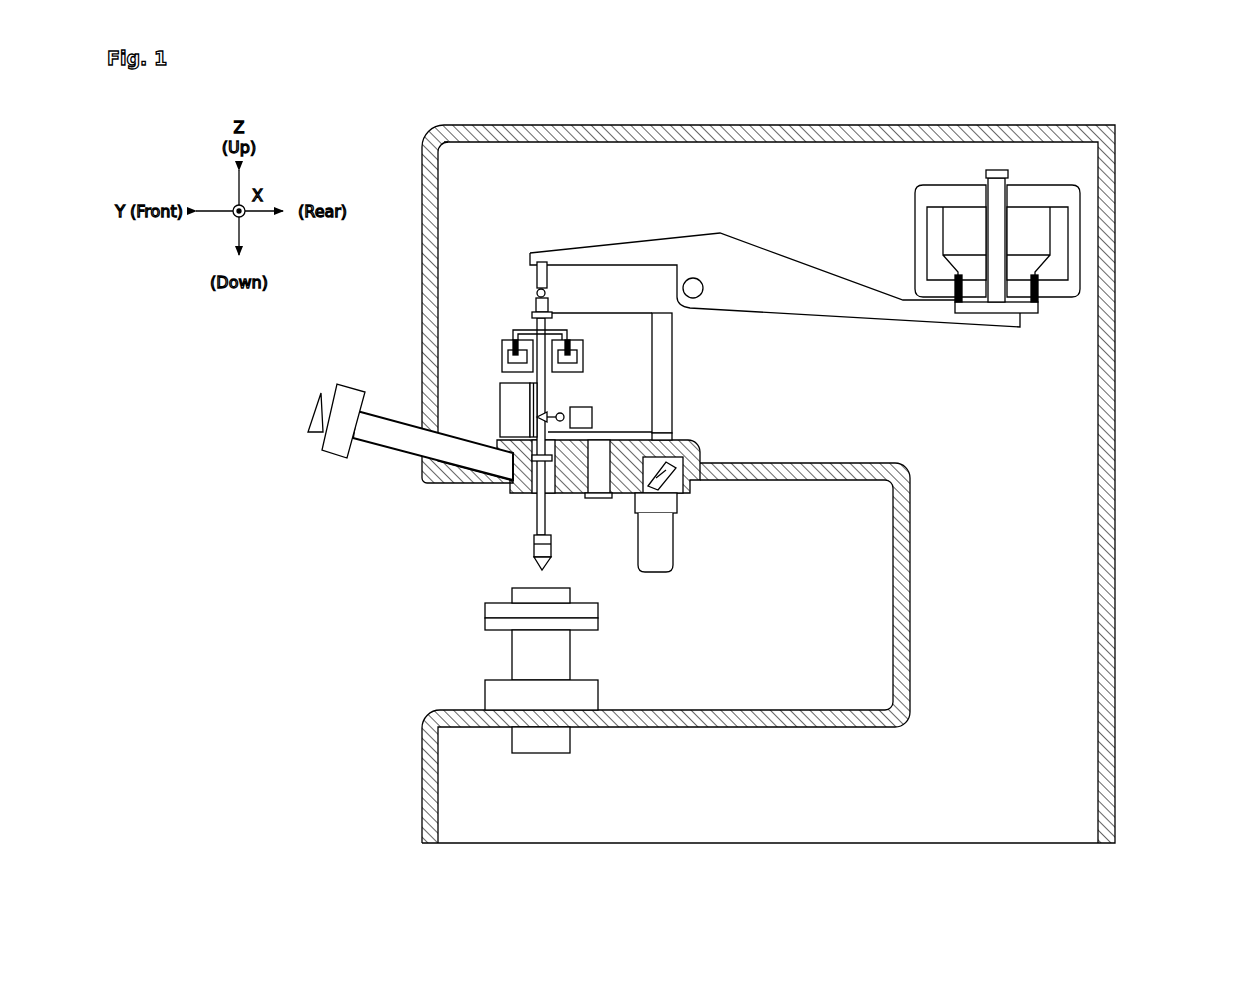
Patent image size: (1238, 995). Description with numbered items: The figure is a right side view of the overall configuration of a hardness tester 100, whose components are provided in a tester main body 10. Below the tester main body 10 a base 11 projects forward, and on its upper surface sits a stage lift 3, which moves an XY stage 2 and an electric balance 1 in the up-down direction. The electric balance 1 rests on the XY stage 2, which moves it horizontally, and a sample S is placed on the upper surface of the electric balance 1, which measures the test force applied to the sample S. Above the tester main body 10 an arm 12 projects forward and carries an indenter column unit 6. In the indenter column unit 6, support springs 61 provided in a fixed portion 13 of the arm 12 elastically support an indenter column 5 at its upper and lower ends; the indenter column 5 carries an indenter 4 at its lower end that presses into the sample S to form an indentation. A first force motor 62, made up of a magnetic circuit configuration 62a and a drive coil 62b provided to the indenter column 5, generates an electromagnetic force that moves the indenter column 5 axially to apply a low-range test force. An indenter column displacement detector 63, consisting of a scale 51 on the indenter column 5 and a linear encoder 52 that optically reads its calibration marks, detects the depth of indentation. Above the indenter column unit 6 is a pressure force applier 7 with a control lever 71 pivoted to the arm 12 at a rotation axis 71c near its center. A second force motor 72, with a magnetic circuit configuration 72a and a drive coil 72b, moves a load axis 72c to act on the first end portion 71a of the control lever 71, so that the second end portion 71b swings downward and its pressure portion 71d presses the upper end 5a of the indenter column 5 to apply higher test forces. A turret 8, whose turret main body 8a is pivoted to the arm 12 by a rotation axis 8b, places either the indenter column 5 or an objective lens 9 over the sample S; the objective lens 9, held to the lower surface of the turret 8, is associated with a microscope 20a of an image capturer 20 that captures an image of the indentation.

The hardness tester 100 is at (1140, 142).
The tester main body 10 is at (784, 484).
The base 11 is at (425, 788).
The arm 12 is at (424, 243).
The fixed portion 13 is at (668, 380).
The electric balance 1 is at (598, 608).
The XY stage 2 is at (598, 628).
The stage lift 3 is at (568, 650).
The indenter 4 is at (533, 566).
The sample S is at (565, 595).
The indenter column 5 is at (526, 409).
The upper end 5a is at (549, 308).
The scale 51 is at (507, 402).
The linear encoder 52 is at (530, 420).
The indenter column unit 6 is at (483, 357).
The support springs 61 is at (615, 314).
The first force motor 62 is at (483, 325).
The magnetic circuit configuration 62a is at (508, 343).
The drive coil 62b is at (535, 340).
The indenter column displacement detector 63 is at (492, 388).
The pressure force applier 7 is at (831, 253).
The control lever 71 is at (759, 294).
The first end portion 71a is at (966, 318).
The second end portion 71b is at (542, 252).
The rotation axis 71c is at (700, 282).
The pressure portion 71d is at (538, 272).
The second force motor 72 is at (1048, 216).
The magnetic circuit configuration 72a is at (1035, 228).
The drive coil 72b is at (1040, 302).
The load axis 72c is at (1000, 173).
The turret 8 is at (597, 488).
The turret main body 8a is at (509, 491).
The rotation axis 8b is at (601, 487).
The objective lens 9 is at (668, 553).
The image capturer 20 is at (396, 450).
The microscope 20a is at (333, 450).